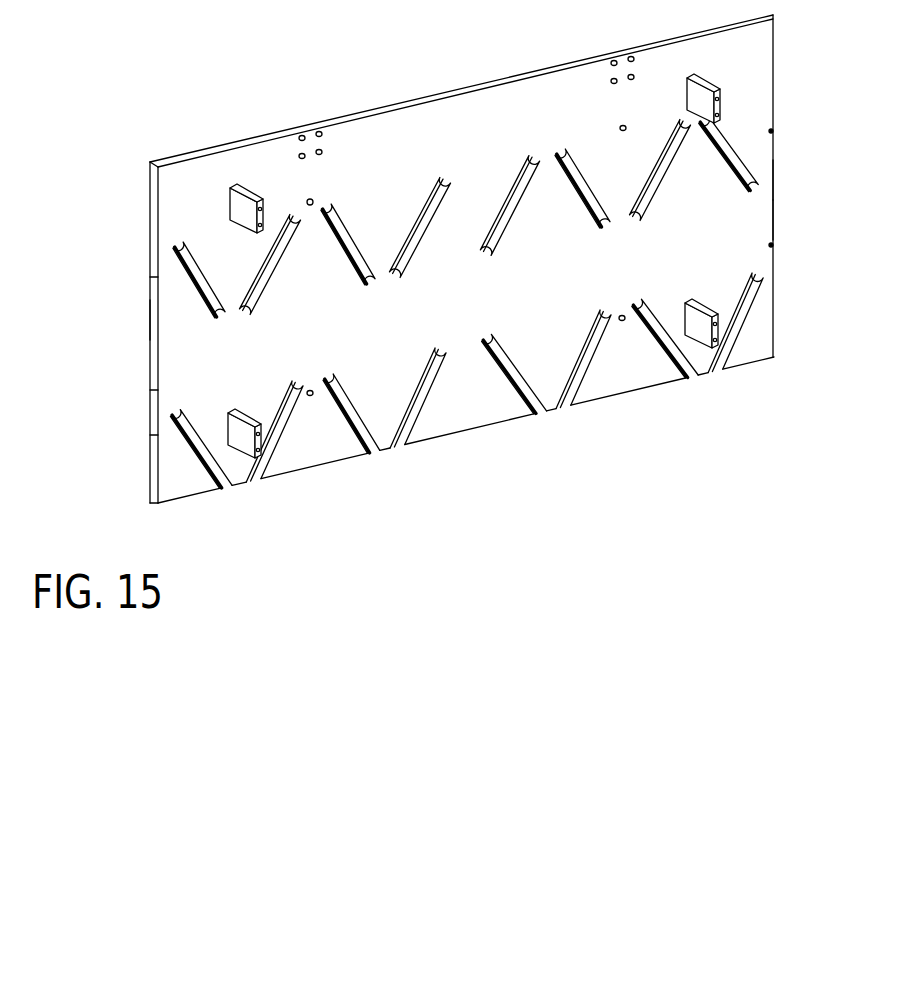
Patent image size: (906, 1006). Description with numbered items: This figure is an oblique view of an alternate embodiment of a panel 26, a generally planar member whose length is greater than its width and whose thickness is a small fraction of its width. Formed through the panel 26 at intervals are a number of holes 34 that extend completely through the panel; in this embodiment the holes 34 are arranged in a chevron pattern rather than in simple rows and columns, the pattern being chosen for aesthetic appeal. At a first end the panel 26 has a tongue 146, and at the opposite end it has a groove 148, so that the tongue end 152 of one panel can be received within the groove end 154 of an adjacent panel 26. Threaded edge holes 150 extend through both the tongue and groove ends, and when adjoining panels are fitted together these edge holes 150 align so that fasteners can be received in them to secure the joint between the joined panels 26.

The panel 26 is at (385, 515).
The holes 34 is at (405, 276).
The tongue 146 is at (150, 338).
The groove 148 is at (768, 212).
The threaded edge holes 150 is at (150, 388).
The tongue end 152 is at (150, 435).
The groove end 154 is at (775, 181).